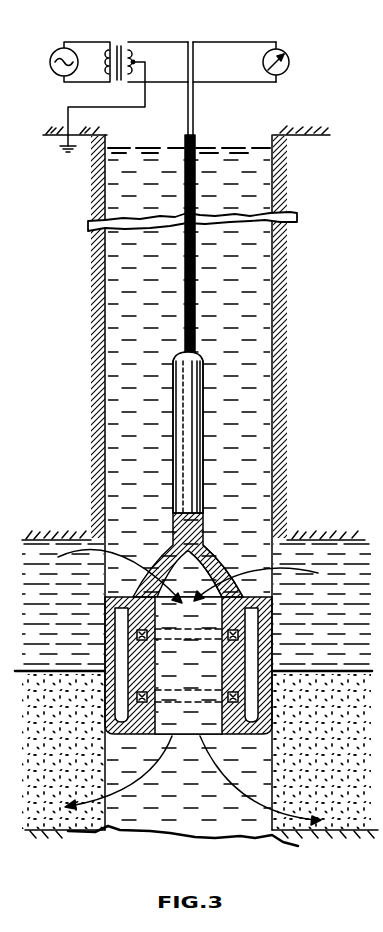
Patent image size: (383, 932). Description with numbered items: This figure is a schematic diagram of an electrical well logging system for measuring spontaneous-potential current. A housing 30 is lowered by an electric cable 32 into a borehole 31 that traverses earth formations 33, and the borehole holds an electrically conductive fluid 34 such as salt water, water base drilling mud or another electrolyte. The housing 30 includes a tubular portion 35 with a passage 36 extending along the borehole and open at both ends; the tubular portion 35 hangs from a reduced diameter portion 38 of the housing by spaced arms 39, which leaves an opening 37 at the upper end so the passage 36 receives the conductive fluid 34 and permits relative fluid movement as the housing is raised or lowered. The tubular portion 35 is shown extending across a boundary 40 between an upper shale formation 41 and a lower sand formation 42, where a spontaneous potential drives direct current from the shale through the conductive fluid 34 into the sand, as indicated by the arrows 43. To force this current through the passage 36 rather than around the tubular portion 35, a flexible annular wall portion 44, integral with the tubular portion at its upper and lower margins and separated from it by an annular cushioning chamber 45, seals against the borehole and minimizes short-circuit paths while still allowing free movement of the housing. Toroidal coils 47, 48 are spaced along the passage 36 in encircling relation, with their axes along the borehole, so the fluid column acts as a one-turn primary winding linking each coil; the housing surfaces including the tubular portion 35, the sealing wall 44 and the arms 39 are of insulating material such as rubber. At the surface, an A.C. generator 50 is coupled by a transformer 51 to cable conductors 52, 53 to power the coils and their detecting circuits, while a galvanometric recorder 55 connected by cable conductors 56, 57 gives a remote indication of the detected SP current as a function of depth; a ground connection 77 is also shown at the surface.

The housing 30 is at (191, 464).
The borehole 31 is at (273, 332).
The electric cable 32 is at (185, 188).
The earth formations 33 is at (306, 361).
The electrically conductive fluid 34 is at (244, 279).
The tubular portion 35 is at (229, 724).
The passage 36 is at (183, 735).
The opening 37 is at (226, 581).
The reduced diameter portion 38 is at (185, 386).
The spaced arms 39 is at (168, 581).
The boundary 40 is at (325, 670).
The upper shale formation 41 is at (319, 631).
The lower sand formation 42 is at (319, 719).
The arrows 43 is at (252, 803).
The flexible annular wall portion 44 is at (104, 700).
The annular cushioning chamber 45 is at (125, 718).
The toroidal coil 47 is at (147, 639).
The toroidal coil 48 is at (149, 697).
The A.C. generator 50 is at (52, 54).
The transformer 51 is at (118, 45).
The cable conductor 52 is at (154, 84).
The cable conductor 53 is at (147, 42).
The galvanometric recorder 55 is at (287, 69).
The cable conductor 56 is at (207, 42).
The cable conductor 57 is at (225, 85).
The ground connection 77 is at (71, 157).